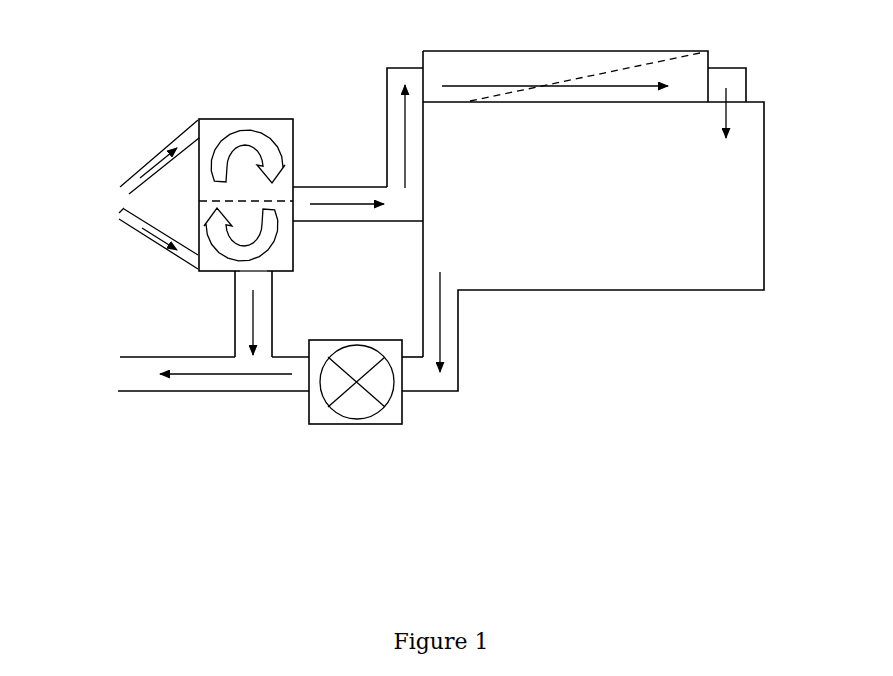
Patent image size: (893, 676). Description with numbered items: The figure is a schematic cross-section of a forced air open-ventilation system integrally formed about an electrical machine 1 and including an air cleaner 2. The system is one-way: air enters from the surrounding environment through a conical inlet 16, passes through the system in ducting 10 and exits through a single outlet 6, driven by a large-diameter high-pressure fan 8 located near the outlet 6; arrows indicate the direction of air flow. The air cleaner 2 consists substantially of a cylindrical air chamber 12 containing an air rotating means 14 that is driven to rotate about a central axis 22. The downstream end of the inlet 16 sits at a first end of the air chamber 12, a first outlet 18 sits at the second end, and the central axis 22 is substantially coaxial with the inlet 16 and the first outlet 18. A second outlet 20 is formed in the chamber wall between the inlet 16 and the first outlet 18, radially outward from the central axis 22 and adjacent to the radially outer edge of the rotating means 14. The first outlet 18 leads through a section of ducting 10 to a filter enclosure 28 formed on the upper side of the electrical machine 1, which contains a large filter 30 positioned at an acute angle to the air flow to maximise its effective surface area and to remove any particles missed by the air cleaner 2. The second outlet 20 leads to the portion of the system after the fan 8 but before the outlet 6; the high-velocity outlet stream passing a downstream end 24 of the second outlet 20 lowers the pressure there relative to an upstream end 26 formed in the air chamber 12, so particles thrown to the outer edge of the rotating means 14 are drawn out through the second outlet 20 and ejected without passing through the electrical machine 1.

The electrical machine 1 is at (671, 308).
The air cleaner 2 is at (197, 109).
The outlet 6 is at (120, 377).
The large-diameter high-pressure fan 8 is at (357, 419).
The ducting 10 is at (393, 118).
The cylindrical air chamber 12 is at (207, 148).
The air rotating means 14 is at (237, 135).
The conical inlet 16 is at (170, 243).
The first outlet 18 is at (295, 193).
The second outlet 20 is at (267, 312).
The central axis 22 is at (267, 204).
The downstream end 24 is at (243, 358).
The upstream end 26 is at (252, 272).
The filter enclosure 28 is at (517, 51).
The filter 30 is at (603, 72).